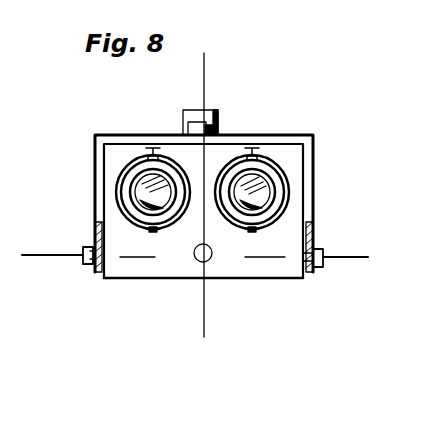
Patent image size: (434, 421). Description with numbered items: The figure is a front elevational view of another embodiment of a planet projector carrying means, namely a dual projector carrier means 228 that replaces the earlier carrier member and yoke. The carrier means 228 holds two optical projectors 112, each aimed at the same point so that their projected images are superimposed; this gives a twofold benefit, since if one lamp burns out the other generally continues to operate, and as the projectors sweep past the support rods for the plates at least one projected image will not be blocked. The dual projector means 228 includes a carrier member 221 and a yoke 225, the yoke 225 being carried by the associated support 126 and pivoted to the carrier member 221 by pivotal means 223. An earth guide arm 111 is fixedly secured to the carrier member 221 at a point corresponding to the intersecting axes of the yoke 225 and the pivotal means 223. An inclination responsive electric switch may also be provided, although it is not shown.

The earth guide arm 111 is at (199, 260).
The optical projectors 112 is at (172, 225).
The support 126 is at (218, 119).
The carrier member 221 is at (125, 267).
The pivotal means 223 is at (82, 253).
The yoke 225 is at (316, 184).
The projector carrier means 228 is at (252, 280).